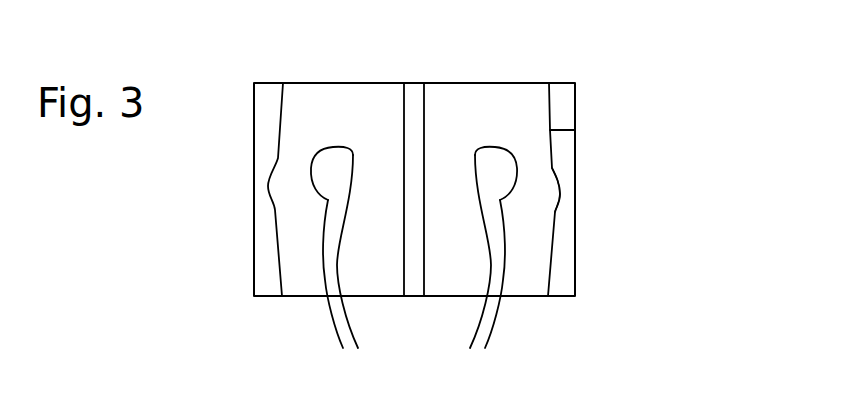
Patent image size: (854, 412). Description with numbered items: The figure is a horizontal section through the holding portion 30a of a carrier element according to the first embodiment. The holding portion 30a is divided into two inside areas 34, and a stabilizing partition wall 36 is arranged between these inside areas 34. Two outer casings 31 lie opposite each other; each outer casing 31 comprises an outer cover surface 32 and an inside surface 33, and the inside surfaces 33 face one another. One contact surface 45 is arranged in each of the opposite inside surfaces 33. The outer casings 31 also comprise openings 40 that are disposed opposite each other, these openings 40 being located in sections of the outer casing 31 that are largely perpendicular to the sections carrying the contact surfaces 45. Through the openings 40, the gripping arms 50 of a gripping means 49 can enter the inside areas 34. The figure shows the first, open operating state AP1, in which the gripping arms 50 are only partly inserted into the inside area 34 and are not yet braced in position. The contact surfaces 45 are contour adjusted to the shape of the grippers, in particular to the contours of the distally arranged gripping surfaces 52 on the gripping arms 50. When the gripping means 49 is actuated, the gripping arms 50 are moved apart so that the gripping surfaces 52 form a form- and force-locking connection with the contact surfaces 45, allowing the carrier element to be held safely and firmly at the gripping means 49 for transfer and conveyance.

The outer casing 31 is at (563, 103).
The outer cover surface 32 is at (575, 143).
The inside surface 33 is at (551, 130).
The inside area 34 is at (339, 132).
The stabilizing partition wall 36 is at (408, 93).
The opening 40 is at (375, 83).
The contact surface 45 is at (559, 197).
The gripping means 49 is at (337, 320).
The gripping arm 50 is at (493, 247).
The gripping surface 52 is at (310, 170).
The holding portion 30a is at (632, 297).
The first, open operating state AP1 is at (687, 336).